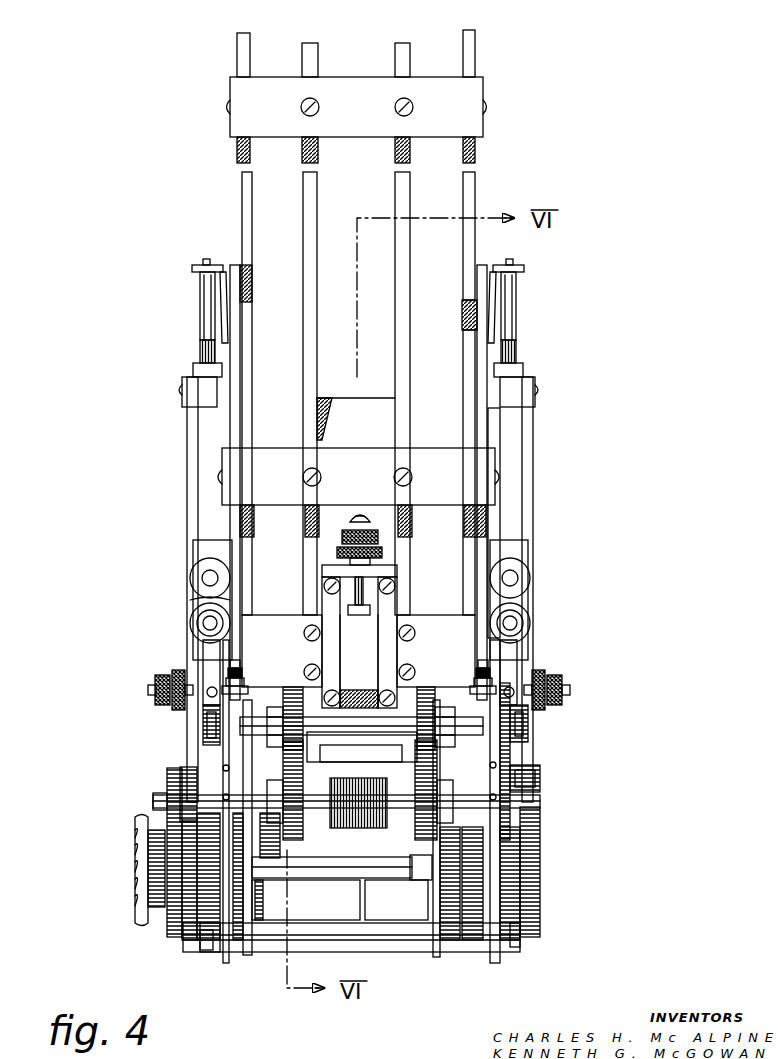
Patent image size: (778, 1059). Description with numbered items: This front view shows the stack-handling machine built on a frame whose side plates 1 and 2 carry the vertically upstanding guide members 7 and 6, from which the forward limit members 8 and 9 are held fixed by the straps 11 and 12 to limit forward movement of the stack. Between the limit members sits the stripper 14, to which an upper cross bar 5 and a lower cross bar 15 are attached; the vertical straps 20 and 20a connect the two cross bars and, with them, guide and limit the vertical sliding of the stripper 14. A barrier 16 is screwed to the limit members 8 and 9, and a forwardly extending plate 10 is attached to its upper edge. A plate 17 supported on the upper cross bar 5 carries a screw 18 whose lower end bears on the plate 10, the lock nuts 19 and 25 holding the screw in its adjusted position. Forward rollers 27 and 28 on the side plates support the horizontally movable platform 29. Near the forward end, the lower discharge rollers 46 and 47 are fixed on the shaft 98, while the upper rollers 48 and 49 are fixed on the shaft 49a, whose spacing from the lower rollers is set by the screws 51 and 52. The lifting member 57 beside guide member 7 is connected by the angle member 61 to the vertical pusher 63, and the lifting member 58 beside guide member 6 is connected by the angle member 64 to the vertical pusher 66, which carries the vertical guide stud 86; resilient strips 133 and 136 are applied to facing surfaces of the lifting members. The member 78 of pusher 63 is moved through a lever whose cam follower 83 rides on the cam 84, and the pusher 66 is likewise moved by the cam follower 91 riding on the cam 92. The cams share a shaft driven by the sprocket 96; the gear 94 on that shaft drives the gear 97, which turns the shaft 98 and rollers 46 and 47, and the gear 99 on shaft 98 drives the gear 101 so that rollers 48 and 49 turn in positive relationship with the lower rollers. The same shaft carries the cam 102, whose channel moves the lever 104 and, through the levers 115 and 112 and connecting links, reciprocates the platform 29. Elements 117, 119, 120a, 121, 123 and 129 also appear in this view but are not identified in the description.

The side plate 1 is at (495, 960).
The side plate 2 is at (225, 965).
The upper cross bar 5 is at (392, 575).
The vertically upstanding guide member 6 is at (243, 34).
The vertically upstanding guide member 7 is at (470, 38).
The forward limit member 8 is at (310, 48).
The forward limit member 9 is at (402, 50).
The forwardly extending plate 10 is at (352, 605).
The strap 11 is at (480, 90).
The strap 12 is at (288, 450).
The stripper 14 is at (355, 398).
The lower cross bar 15 is at (366, 700).
The barrier 16 is at (452, 615).
The plate 17 is at (398, 568).
The screw 18 is at (359, 661).
The lock nut 19 is at (340, 545).
The vertical strap 20 is at (305, 646).
The vertical strap 20a is at (412, 650).
The lock nut 25 is at (366, 538).
The roller 27 is at (205, 722).
The roller 28 is at (505, 760).
The platform 29 is at (330, 755).
The lower discharge roller 46 is at (300, 830).
The lower discharge roller 47 is at (418, 832).
The upper roller 48 is at (293, 687).
The upper roller 49 is at (420, 687).
The shaft 49a is at (458, 718).
The screw 51 is at (230, 663).
The screw 52 is at (488, 663).
The lifting member 57 is at (464, 322).
The lifting member 58 is at (242, 375).
The angle member 61 is at (500, 268).
The vertical pusher 63 is at (530, 497).
The angle member 64 is at (222, 268).
The vertical pusher 66 is at (178, 428).
The member of vertical pusher 78 is at (525, 432).
The cam follower 83 is at (196, 760).
The cam 84 is at (525, 918).
The vertical guide stud 86 is at (148, 673).
The cam follower 91 is at (542, 778).
The cam 92 is at (190, 945).
The gear 94 is at (170, 932).
The sprocket 96 is at (135, 904).
The gear 97 is at (168, 775).
The shaft 98 is at (154, 800).
The gear 99 is at (540, 818).
The gear 101 is at (528, 730).
The cam 102 is at (453, 945).
The lever 104 is at (434, 902).
The lever 112 is at (362, 902).
The lever 115 is at (252, 895).
The roller bracket 117 is at (205, 604).
The left block 119 is at (202, 550).
The roller 120a is at (202, 578).
The roller 121 is at (195, 624).
The plate 123 is at (225, 662).
The plate 129 is at (492, 662).
The strip of resilient material 133 is at (468, 366).
The strip of resilient material 136 is at (252, 316).